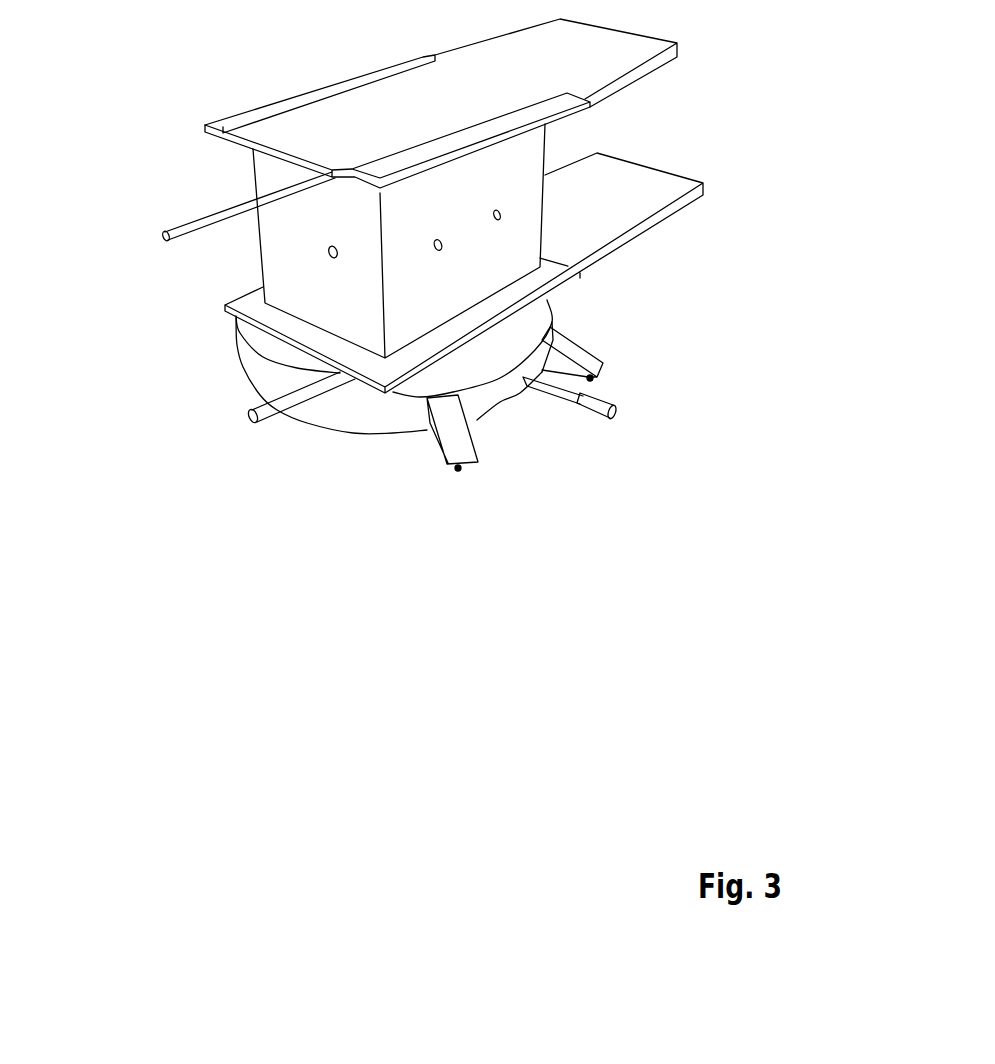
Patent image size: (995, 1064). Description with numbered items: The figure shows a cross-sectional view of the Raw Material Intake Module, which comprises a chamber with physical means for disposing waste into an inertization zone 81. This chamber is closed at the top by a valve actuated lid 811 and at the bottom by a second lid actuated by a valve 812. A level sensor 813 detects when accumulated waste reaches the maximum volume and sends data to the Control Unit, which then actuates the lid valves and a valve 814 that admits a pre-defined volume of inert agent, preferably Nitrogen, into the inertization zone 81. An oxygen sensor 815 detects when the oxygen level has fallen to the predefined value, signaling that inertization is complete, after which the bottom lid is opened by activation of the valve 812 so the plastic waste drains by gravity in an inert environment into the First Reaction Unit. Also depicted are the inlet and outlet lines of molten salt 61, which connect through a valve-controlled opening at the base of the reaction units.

The inertization zone 81 is at (258, 179).
The valve actuated lid 811 is at (660, 37).
The second lid actuated by a valve 812 is at (225, 308).
The level sensor 813 is at (459, 473).
The valve 814 is at (190, 222).
The oxygen sensor 815 is at (328, 252).
The inlet and outlet lines of molten salt 61 is at (248, 416).